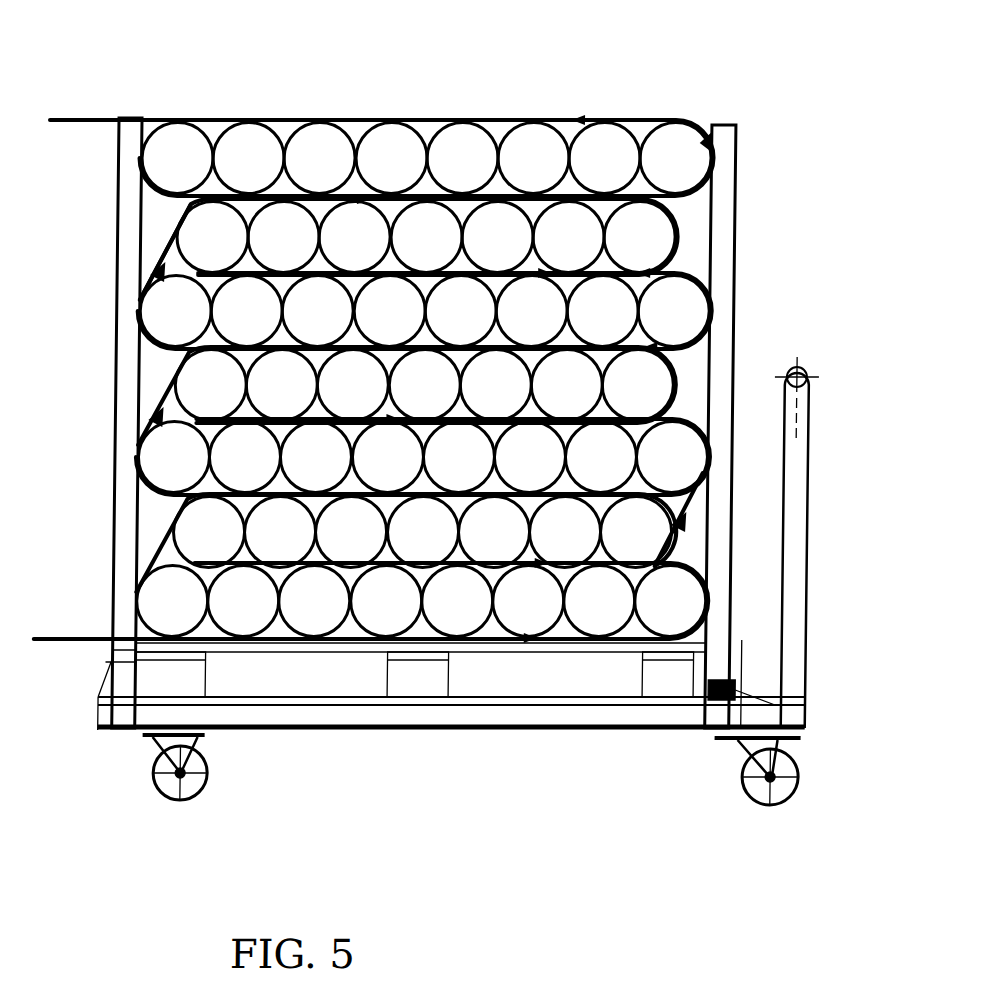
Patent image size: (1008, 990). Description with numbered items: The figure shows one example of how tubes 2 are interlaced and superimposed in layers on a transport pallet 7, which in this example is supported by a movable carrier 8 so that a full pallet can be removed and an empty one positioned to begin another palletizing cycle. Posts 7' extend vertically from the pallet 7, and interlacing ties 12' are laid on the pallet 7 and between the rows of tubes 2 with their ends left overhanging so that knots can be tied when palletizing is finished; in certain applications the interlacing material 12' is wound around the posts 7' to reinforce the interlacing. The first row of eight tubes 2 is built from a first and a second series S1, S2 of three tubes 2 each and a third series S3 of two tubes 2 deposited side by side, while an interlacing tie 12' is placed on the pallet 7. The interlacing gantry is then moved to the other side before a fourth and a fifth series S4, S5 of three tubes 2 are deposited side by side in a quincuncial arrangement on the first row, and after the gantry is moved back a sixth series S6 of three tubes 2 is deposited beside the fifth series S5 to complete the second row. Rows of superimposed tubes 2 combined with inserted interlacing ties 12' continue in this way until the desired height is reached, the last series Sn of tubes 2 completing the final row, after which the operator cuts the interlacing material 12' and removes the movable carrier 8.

The tubes 2 is at (363, 222).
The last series of tubes Sn is at (672, 152).
The posts 7' is at (783, 426).
The interlacing ties 12' is at (484, 371).
The first series of tubes S1 is at (318, 602).
The second series of tubes S2 is at (454, 608).
The third series of tubes S3 is at (693, 605).
The fourth series of tubes S4 is at (430, 517).
The fifth series of tubes S5 is at (461, 482).
The sixth series of tubes S6 is at (517, 520).
The transport pallet 7 is at (451, 747).
The movable carrier 8 is at (724, 733).